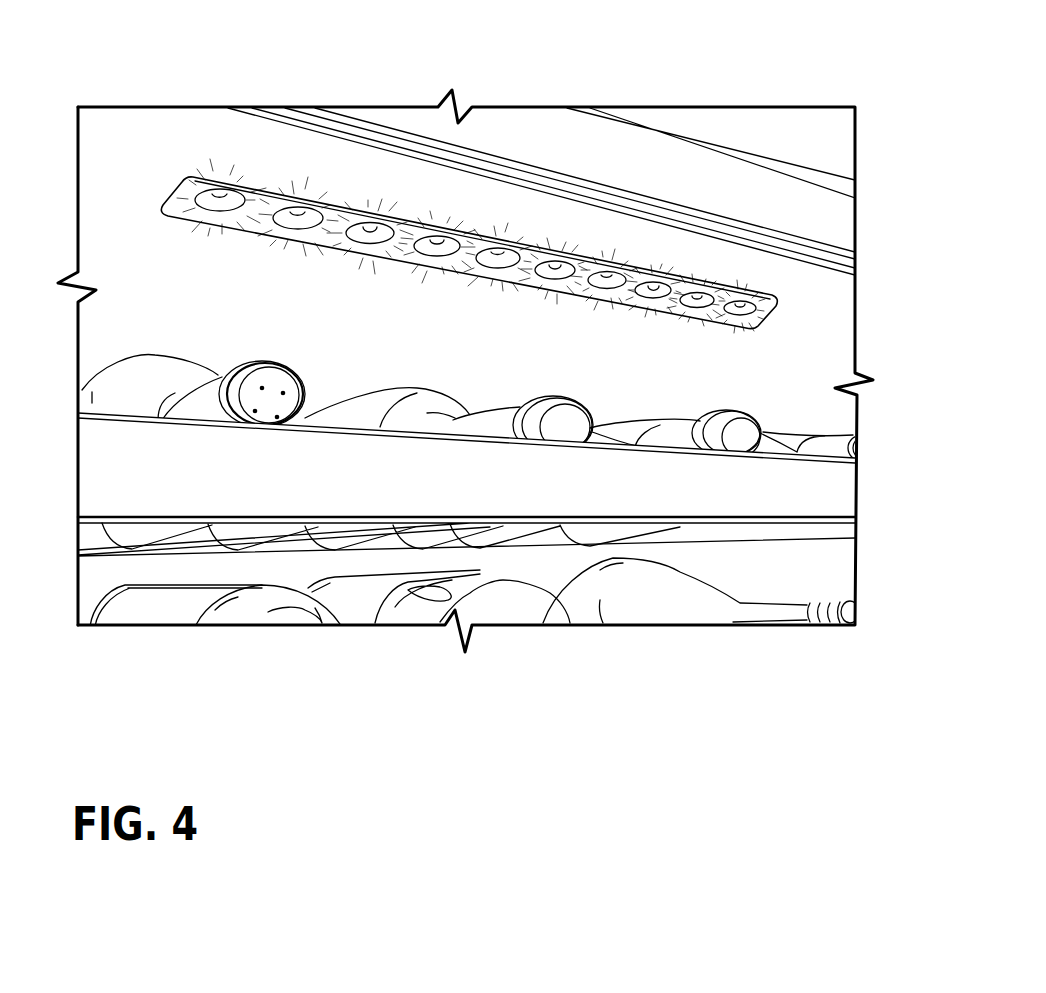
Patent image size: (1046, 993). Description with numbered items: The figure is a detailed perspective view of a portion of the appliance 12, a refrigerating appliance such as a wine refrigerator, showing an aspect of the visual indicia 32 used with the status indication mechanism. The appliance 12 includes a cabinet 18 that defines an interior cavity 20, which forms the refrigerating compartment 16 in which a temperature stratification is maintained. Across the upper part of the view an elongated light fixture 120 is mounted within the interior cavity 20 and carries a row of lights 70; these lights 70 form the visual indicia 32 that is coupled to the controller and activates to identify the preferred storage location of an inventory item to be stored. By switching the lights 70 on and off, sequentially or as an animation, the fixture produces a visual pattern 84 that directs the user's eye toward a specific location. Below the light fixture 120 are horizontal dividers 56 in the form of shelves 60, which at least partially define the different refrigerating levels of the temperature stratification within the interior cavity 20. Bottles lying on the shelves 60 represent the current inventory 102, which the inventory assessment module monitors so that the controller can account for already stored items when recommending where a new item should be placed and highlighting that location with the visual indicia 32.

The appliance 12 is at (512, 88).
The refrigerating compartment 16 is at (66, 327).
The cabinet 18 is at (820, 347).
The interior cavity 20 is at (127, 133).
The visual indicia 32 is at (465, 285).
The horizontal dividers 56 is at (835, 490).
The shelves 60 is at (510, 490).
The lights 70 is at (634, 252).
The visual pattern 84 is at (344, 185).
The current inventory 102 is at (125, 392).
The light fixtures 120 is at (267, 203).